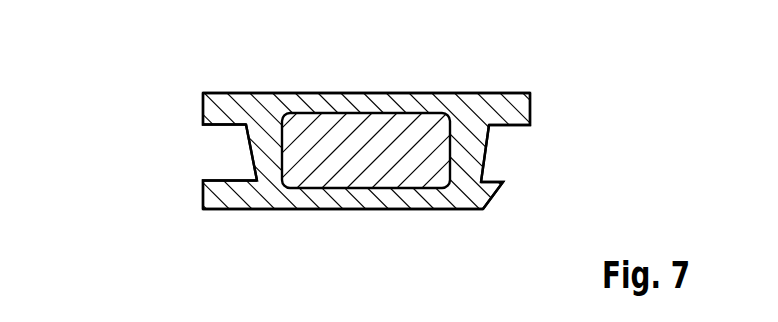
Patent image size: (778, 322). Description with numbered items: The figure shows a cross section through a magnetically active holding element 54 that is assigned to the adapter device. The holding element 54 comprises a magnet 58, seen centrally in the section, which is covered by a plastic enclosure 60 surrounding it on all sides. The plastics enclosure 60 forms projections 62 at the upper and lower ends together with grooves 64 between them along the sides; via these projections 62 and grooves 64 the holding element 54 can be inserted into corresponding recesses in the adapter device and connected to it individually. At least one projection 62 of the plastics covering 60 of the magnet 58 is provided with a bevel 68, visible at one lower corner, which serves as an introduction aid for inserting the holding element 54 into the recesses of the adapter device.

The magnetically active holding element 54 is at (100, 129).
The magnet 58 is at (363, 175).
The plastic enclosure 60 is at (243, 101).
The projection 62 is at (225, 109).
The groove 64 is at (238, 157).
The bevel 68 is at (490, 186).